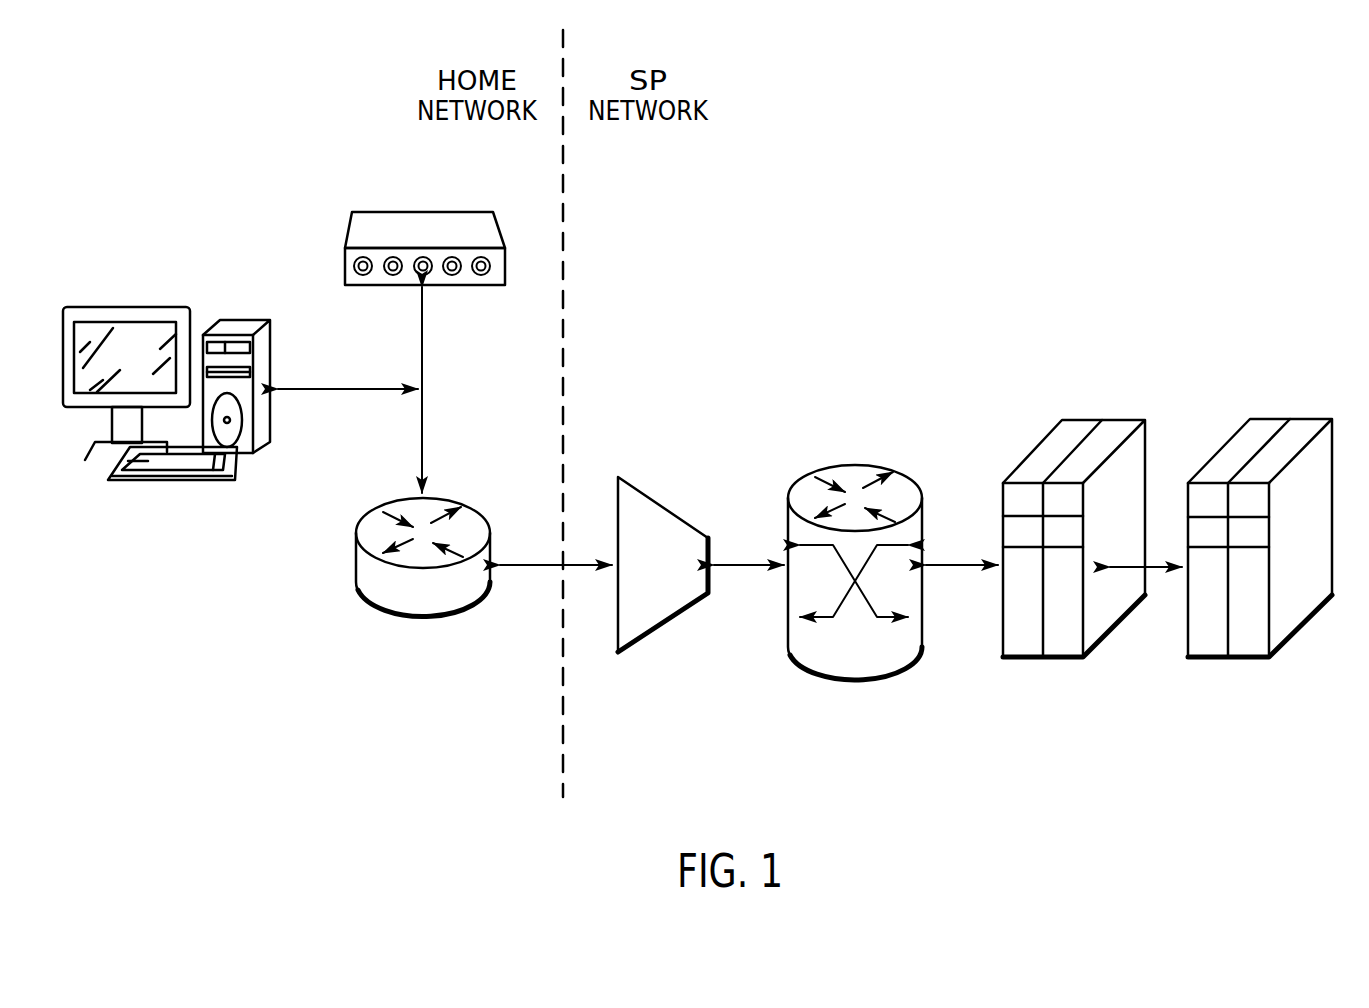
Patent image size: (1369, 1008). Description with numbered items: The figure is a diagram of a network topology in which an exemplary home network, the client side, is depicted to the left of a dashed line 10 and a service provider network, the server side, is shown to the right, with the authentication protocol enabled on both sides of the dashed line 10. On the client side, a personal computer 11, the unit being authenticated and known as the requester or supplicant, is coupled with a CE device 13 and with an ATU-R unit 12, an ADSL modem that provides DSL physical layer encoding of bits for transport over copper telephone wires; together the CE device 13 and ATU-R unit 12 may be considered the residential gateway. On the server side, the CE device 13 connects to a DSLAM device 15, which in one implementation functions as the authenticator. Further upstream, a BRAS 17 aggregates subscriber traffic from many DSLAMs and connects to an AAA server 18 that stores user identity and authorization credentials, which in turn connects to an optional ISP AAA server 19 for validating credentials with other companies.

The dashed line 10 is at (565, 704).
The personal computer (PC) 11 is at (125, 305).
The ATU-R unit 12 is at (370, 212).
The CE device 13 is at (355, 563).
The DSLAM device 15 is at (666, 507).
The Broadband Remote Access Server (BRAS) 17 is at (842, 463).
The AAA server 18 is at (1080, 418).
The ISP AAA server 19 is at (1287, 418).